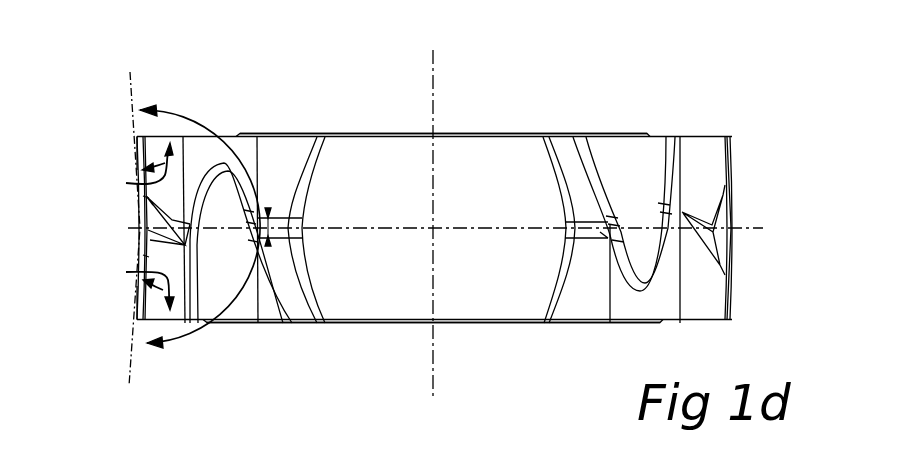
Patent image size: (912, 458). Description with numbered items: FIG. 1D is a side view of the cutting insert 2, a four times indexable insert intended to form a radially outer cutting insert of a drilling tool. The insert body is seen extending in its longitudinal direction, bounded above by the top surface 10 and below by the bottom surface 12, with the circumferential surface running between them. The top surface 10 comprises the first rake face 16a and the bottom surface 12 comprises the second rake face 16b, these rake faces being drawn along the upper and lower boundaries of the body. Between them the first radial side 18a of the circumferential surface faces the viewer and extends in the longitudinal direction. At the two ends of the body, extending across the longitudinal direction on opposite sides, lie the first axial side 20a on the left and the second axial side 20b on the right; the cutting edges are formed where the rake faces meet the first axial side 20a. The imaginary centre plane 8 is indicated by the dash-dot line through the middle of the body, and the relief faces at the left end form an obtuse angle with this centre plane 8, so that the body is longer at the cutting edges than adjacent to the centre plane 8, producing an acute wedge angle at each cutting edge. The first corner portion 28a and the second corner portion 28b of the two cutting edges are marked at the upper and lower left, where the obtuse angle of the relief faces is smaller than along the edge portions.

The cutting insert 2 is at (430, 229).
The imaginary centre plane 8 is at (747, 228).
The top surface 10 is at (343, 92).
The bottom surface 12 is at (343, 365).
The first rake face 16a is at (480, 115).
The second rake face 16b is at (471, 338).
The first radial side 18a is at (402, 205).
The first axial side 20a is at (118, 212).
The second axial side 20b is at (733, 252).
The first corner portion 28a is at (138, 137).
The second corner portion 28b is at (138, 320).